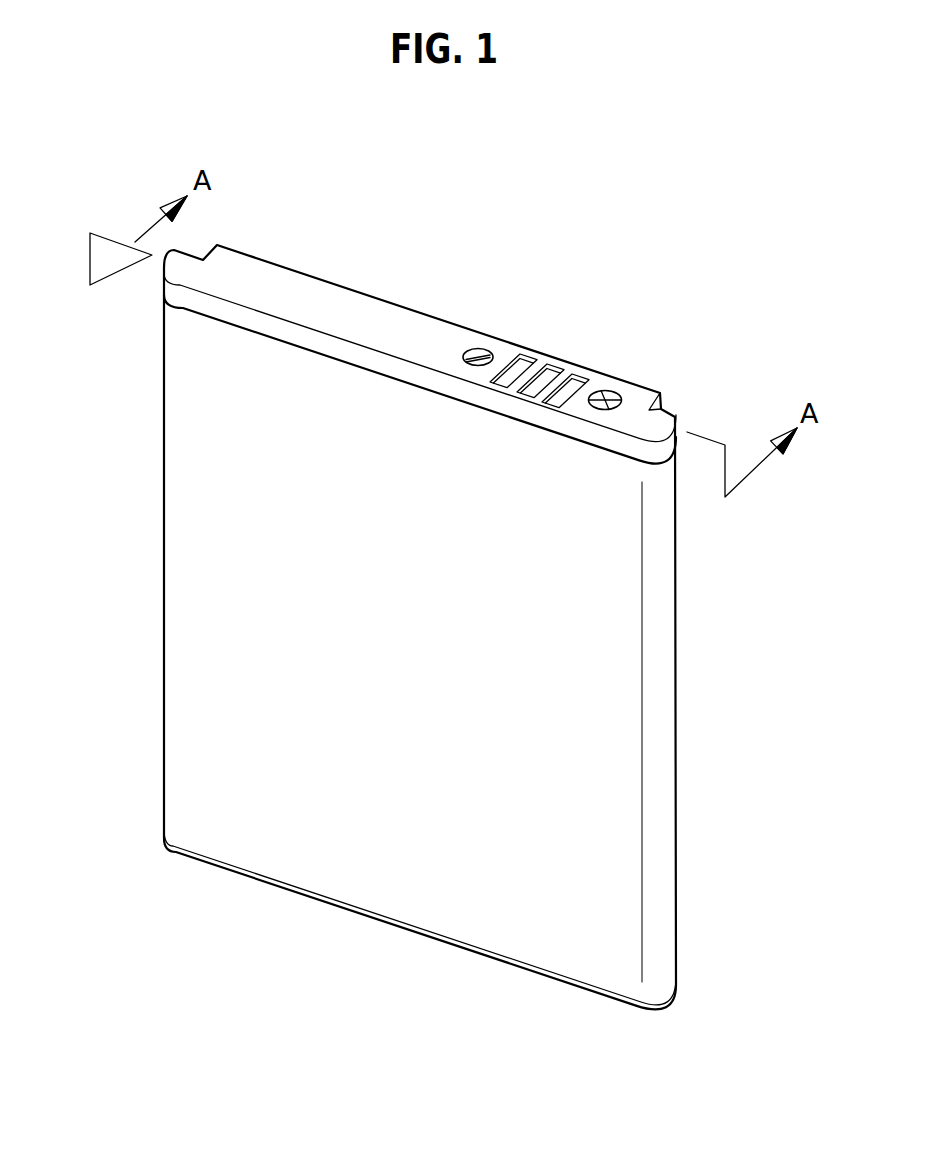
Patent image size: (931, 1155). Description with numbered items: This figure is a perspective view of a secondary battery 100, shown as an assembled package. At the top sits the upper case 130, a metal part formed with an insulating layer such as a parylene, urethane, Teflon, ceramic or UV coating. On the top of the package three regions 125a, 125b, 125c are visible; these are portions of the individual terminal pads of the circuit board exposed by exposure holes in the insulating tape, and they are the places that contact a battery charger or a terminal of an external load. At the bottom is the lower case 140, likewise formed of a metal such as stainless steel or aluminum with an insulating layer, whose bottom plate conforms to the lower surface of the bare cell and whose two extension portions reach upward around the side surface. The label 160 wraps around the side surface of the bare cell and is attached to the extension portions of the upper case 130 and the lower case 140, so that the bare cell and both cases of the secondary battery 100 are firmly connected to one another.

The secondary battery 100 is at (358, 185).
The upper case 130 is at (372, 317).
The exposed region 125a is at (573, 375).
The exposed region 125b is at (526, 354).
The exposed region 125c is at (550, 367).
The label 160 is at (663, 630).
The lower case 140 is at (677, 991).